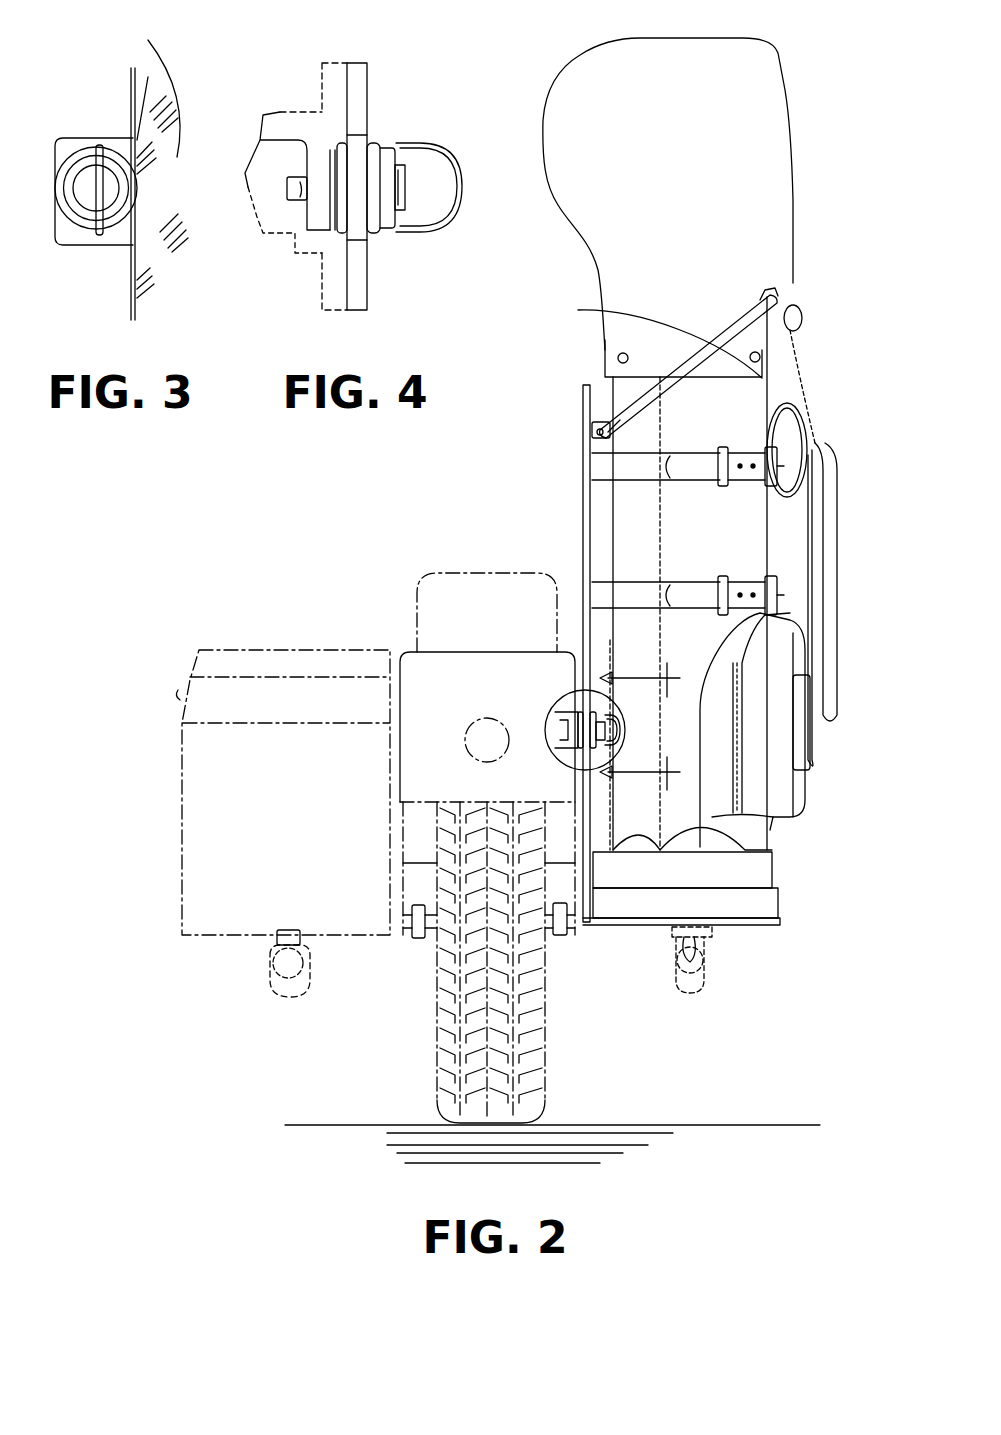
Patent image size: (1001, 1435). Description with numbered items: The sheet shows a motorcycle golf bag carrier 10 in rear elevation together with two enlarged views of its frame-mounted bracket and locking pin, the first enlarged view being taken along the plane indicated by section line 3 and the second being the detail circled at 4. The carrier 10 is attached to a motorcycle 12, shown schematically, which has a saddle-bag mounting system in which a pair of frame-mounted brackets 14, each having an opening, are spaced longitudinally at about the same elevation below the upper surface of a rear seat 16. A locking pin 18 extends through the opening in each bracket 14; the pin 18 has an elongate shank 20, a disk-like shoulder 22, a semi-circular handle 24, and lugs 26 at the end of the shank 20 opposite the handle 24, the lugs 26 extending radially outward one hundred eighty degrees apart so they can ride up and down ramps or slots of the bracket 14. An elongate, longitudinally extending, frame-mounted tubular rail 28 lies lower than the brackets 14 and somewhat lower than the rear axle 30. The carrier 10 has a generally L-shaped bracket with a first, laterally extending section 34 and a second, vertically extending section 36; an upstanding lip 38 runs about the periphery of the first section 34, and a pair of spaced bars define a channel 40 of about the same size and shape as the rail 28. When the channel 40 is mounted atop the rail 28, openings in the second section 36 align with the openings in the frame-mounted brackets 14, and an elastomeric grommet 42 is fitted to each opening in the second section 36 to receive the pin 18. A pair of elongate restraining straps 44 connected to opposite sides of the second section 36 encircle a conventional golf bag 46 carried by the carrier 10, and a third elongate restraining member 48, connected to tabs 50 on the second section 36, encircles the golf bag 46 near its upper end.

In FIG. 2, the section line of FIG. 3 is at (650, 729).
In FIG. 2, the detail circle of FIG. 4 is at (572, 700).
In FIG. 2, the motorcycle golf bag carrier 10 is at (535, 490).
In FIG. 2, the motorcycle 12 is at (378, 578).
In FIG. 4, the frame-mounted bracket 14 is at (300, 132).
In FIG. 2, the rear seat 16 is at (462, 587).
In FIG. 3, the locking pin 18 is at (103, 172).
In FIG. 4, the locking pin 18 is at (376, 162).
In FIG. 3, the elongate shank 20 is at (87, 203).
In FIG. 4, the elongate shank 20 is at (402, 185).
In FIG. 3, the disk-like shoulder 22 is at (77, 173).
In FIG. 4, the disk-like shoulder 22 is at (385, 222).
In FIG. 3, the semi-circular handle 24 is at (97, 147).
In FIG. 4, the semi-circular handle 24 is at (447, 228).
In FIG. 4, the lug 26 is at (302, 197).
In FIG. 2, the tubular rail 28 is at (707, 967).
In FIG. 2, the rear axle 30 is at (548, 935).
In FIG. 2, the first laterally extending section 34 is at (757, 920).
In FIG. 3, the second vertically extending section 36 is at (143, 194).
In FIG. 4, the second vertically extending section 36 is at (355, 80).
In FIG. 2, the second vertically extending section 36 is at (583, 395).
In FIG. 2, the upstanding lip 38 is at (765, 900).
In FIG. 2, the channel 40 is at (680, 955).
In FIG. 3, the elastomeric grommet 42 is at (100, 150).
In FIG. 4, the elastomeric grommet 42 is at (372, 150).
In FIG. 2, the strap 44 is at (750, 472).
In FIG. 3, the golf bag 46 is at (150, 135).
In FIG. 2, the golf bag 46 is at (696, 444).
In FIG. 2, the third elongate restraining member 48 is at (598, 310).
In FIG. 2, the tab 50 is at (598, 435).